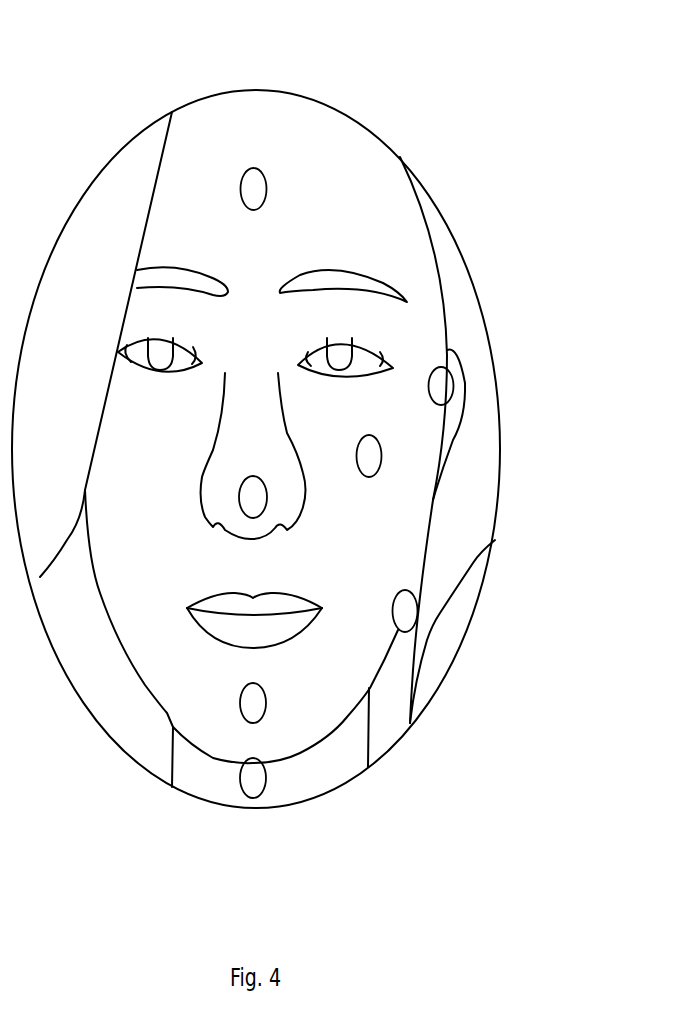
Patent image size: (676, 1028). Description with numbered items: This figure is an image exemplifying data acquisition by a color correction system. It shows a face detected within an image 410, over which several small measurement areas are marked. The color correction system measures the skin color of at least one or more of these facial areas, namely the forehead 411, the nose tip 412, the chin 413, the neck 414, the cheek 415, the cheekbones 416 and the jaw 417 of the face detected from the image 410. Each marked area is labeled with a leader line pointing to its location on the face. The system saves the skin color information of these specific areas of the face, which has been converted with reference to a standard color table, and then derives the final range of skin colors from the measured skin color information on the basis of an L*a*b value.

The image 410 is at (260, 89).
The forehead 411 is at (258, 183).
The nose tip 412 is at (445, 383).
The chin 413 is at (370, 455).
The neck 414 is at (407, 613).
The cheek 415 is at (253, 792).
The cheekbones 416 is at (248, 713).
The jaw 417 is at (253, 498).